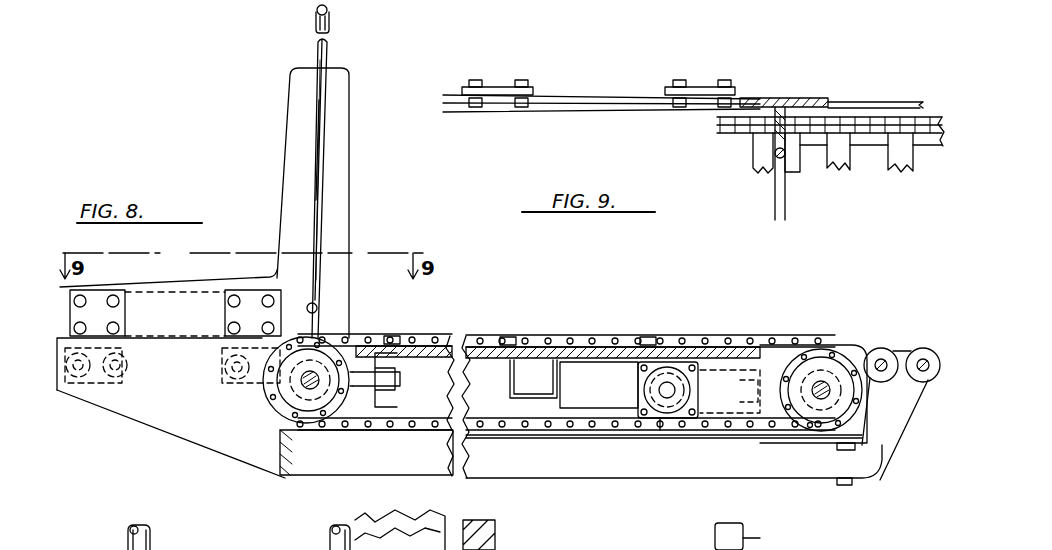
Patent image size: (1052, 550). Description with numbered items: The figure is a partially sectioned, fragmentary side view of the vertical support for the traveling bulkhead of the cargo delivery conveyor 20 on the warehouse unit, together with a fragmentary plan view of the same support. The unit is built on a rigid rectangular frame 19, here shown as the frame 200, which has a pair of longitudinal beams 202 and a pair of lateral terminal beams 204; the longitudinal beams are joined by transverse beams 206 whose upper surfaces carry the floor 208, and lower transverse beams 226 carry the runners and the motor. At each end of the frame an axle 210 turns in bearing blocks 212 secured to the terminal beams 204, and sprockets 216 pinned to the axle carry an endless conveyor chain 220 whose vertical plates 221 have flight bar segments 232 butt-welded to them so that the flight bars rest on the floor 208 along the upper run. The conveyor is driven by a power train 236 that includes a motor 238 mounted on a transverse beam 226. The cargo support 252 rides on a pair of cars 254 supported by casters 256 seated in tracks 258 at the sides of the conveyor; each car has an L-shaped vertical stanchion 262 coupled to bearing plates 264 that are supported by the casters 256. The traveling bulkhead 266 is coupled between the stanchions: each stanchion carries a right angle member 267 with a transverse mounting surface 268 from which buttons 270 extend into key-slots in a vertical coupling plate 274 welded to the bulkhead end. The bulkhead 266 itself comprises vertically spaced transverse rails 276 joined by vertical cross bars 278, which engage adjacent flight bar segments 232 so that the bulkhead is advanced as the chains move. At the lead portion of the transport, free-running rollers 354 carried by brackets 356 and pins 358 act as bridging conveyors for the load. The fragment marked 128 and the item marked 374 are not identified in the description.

In FIG. 8, the rigid rectangular frame 19 is at (690, 494).
In FIG. 8, the cargo delivery conveyor 20 is at (600, 330).
In FIG. 8, the rod 128 is at (332, 527).
In FIG. 8, the rectangular frame 200 is at (818, 492).
In FIG. 8, the longitudinal beams 202 is at (548, 460).
In FIG. 8, the terminal beams 204 is at (383, 409).
In FIG. 8, the transverse beams 206 is at (533, 398).
In FIG. 8, the floor 208 is at (403, 334).
In FIG. 8, the axle 210 is at (300, 386).
In FIG. 8, the bearing blocks 212 is at (250, 372).
In FIG. 8, the sprockets 216 is at (318, 405).
In FIG. 9, the sprockets 216 is at (753, 133).
In FIG. 8, the endless conveyor chain 220 is at (570, 432).
In FIG. 9, the endless conveyor chain 220 is at (905, 127).
In FIG. 8, the vertically arranged plates 221 is at (440, 428).
In FIG. 8, the lower transverse beams 226 is at (282, 455).
In FIG. 8, the flight bar segments 232 is at (765, 320).
In FIG. 9, the flight bar segments 232 is at (905, 170).
In FIG. 8, the power train 236 is at (683, 431).
In FIG. 8, the motor 238 is at (667, 368).
In FIG. 8, the cargo support 252 is at (358, 63).
In FIG. 9, the cargo support 252 is at (790, 220).
In FIG. 8, the cars 254 is at (267, 262).
In FIG. 9, the cars 254 is at (568, 87).
In FIG. 8, the casters 256 is at (130, 363).
In FIG. 9, the tracks 258 is at (615, 108).
In FIG. 8, the stanchion 262 is at (338, 180).
In FIG. 9, the stanchion 262 is at (805, 102).
In FIG. 8, the bearing plates 264 is at (225, 303).
In FIG. 9, the bearing plates 264 is at (490, 87).
In FIG. 8, the traveling bulkhead 266 is at (311, 53).
In FIG. 9, the right angle member 267 is at (785, 107).
In FIG. 9, the transverse mounting surface 268 is at (752, 97).
In FIG. 9, the buttons 270 is at (767, 137).
In FIG. 9, the coupling plate 274 is at (776, 156).
In FIG. 8, the rails 276 is at (331, 11).
In FIG. 8, the cross bars 278 is at (314, 155).
In FIG. 8, the free-running rollers 354 is at (924, 348).
In FIG. 8, the brackets 356 is at (909, 412).
In FIG. 8, the pins 358 is at (922, 368).
In FIG. 8, the power take-off 374 is at (769, 536).